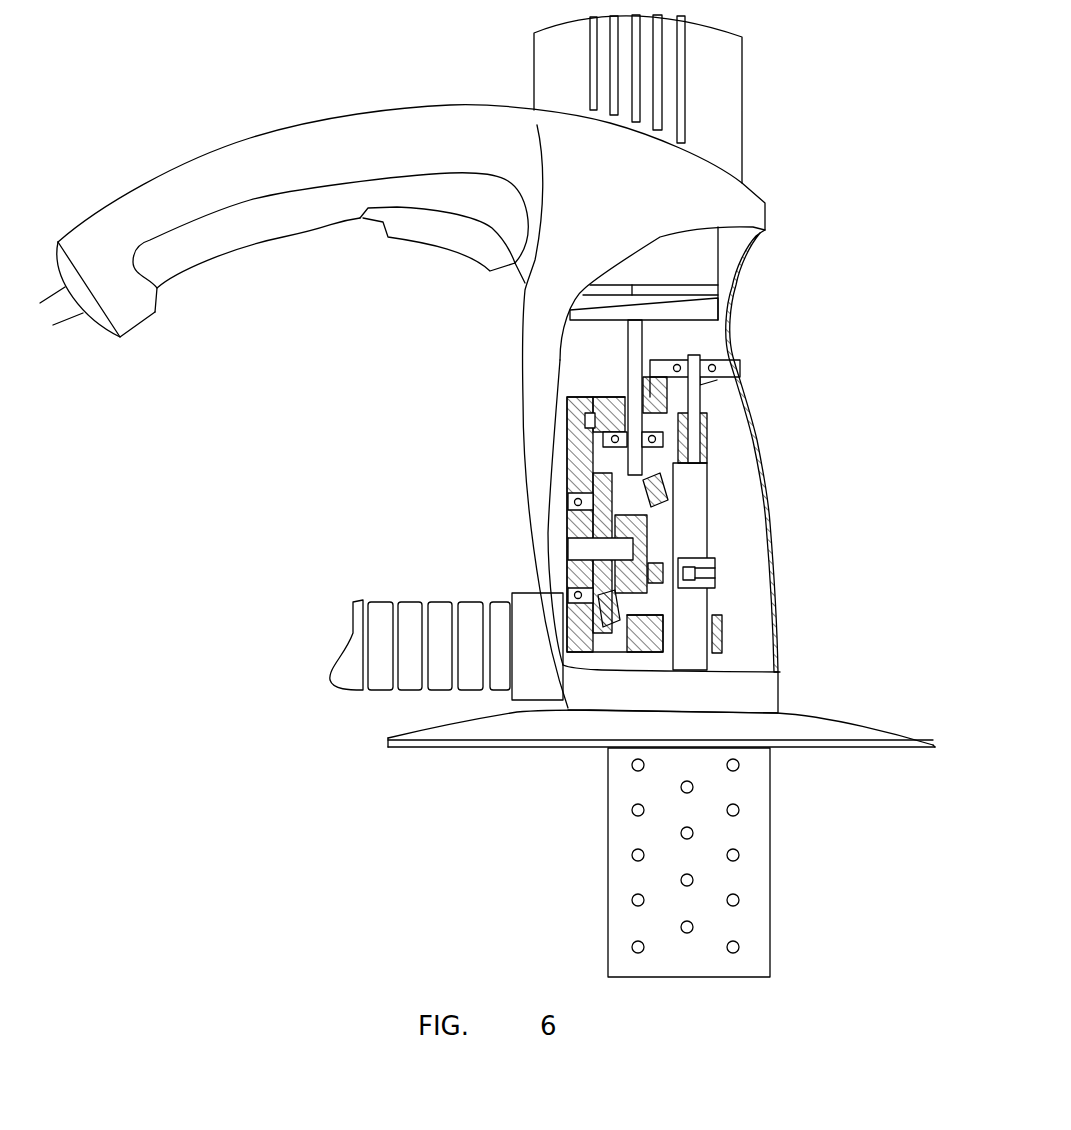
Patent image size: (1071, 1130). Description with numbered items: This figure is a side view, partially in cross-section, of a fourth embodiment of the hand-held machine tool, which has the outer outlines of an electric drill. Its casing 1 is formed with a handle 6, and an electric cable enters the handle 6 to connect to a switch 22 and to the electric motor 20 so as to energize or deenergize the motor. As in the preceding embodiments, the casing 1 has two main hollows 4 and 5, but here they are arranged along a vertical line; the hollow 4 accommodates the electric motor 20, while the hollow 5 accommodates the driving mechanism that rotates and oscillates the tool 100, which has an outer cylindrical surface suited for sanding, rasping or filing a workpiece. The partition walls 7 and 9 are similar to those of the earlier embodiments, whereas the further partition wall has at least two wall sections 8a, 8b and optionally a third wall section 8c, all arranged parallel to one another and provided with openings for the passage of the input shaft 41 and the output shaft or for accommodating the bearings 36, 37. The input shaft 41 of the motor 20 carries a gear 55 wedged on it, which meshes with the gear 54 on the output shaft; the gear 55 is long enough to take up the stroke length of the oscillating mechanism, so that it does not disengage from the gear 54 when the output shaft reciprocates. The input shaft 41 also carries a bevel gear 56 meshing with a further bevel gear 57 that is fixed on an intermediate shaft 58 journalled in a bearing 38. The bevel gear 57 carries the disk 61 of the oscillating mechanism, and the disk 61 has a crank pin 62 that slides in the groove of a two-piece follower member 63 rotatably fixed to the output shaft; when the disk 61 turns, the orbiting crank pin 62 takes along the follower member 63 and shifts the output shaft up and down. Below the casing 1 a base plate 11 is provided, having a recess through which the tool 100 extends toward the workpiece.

The casing 1 is at (750, 59).
The main hollow 4 is at (523, 283).
The main hollow 5 is at (580, 470).
The handle 6 is at (240, 165).
The partition wall 7 is at (580, 493).
The wall section 8a is at (600, 437).
The wall section 8b is at (735, 368).
The wall section 8c is at (592, 403).
The partition wall 9 is at (597, 642).
The base plate 11 is at (462, 727).
The electric motor 20 is at (693, 250).
The switch 22 is at (403, 233).
The bearing 36 is at (680, 473).
The bearing 37 is at (717, 380).
The bearing 38 is at (590, 520).
The input shaft 41 is at (637, 328).
The gear 54 is at (583, 423).
The gear 55 is at (703, 432).
The bevel gear 56 is at (657, 497).
The bevel gear 57 is at (608, 605).
The intermediate shaft 58 is at (573, 553).
The disk 61 is at (640, 532).
The crank pin 62 is at (667, 588).
The follower member 63 is at (715, 565).
The tool 100 is at (753, 813).